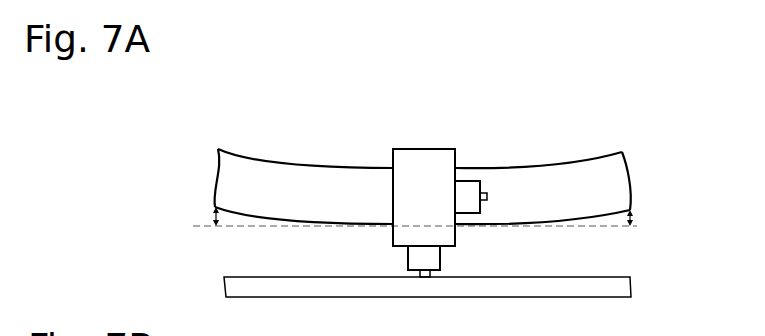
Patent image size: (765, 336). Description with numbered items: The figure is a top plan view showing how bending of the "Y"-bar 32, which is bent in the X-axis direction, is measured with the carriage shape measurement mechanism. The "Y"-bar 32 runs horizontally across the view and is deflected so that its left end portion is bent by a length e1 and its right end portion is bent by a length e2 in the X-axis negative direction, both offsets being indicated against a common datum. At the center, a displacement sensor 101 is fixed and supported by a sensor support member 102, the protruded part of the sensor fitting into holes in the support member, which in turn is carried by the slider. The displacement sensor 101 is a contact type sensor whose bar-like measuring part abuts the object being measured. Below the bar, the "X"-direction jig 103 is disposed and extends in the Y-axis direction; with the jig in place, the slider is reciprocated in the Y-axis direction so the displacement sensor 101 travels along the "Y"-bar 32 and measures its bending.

The "Y"-bar 32 is at (345, 177).
The displacement sensor 101 is at (465, 190).
The sensor support member 102 is at (418, 157).
The "X"-direction jig 103 is at (315, 288).
The length e1 is at (213, 210).
The length e2 is at (633, 213).